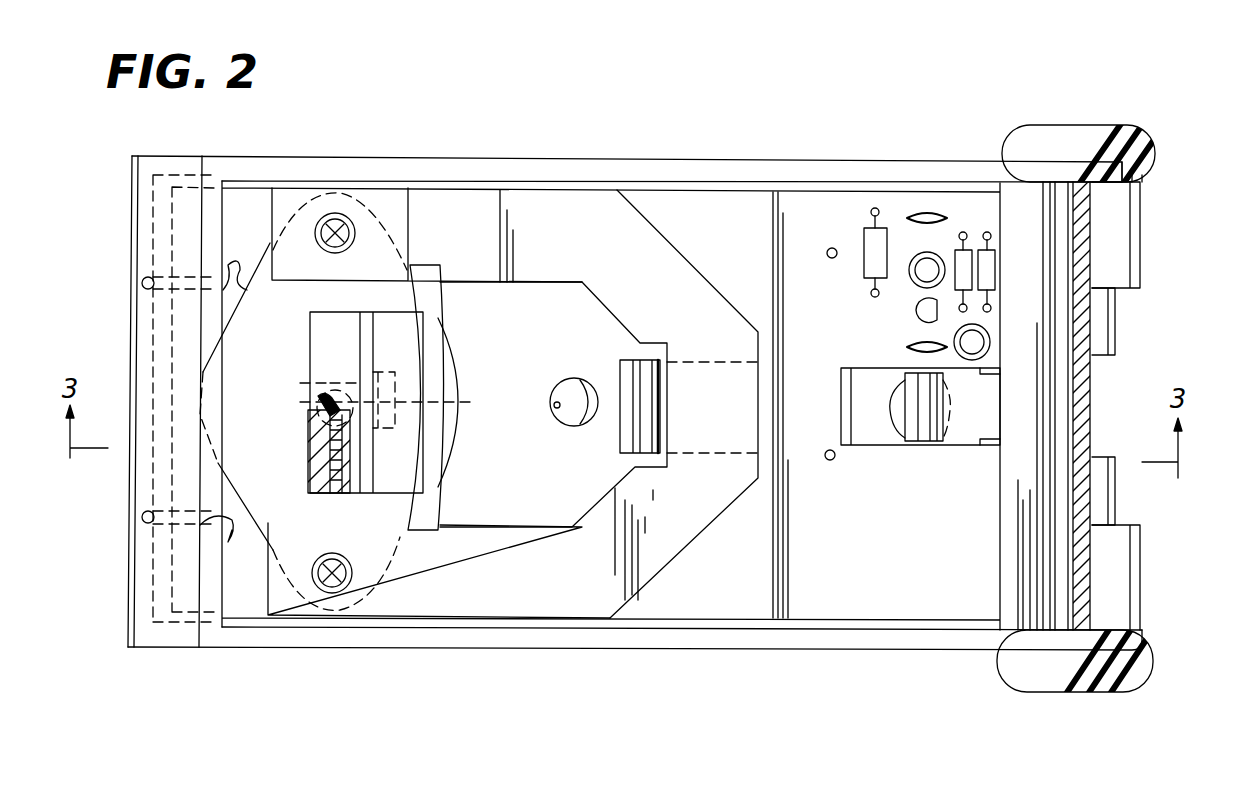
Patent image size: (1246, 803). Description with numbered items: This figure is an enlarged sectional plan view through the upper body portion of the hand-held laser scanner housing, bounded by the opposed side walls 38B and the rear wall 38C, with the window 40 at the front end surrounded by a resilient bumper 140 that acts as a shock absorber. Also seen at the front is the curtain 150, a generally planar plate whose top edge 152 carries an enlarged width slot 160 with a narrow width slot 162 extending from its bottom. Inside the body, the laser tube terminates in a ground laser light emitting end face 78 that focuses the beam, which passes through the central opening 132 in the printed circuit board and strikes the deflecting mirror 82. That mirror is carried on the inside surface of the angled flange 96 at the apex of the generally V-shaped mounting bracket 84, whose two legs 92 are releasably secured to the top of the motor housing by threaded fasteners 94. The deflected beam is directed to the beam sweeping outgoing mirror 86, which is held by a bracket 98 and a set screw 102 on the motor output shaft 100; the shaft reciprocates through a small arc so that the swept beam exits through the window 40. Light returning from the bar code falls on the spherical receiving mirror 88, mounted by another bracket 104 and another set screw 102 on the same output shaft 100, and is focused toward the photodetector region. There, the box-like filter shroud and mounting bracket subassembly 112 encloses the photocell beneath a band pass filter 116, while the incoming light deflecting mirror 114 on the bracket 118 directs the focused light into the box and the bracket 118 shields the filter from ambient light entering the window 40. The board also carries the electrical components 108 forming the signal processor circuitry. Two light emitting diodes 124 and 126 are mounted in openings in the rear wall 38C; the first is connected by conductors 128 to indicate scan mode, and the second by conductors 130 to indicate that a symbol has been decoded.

The side walls 38B is at (778, 162).
The rear wall 38C is at (135, 478).
The window 40 is at (1092, 303).
The laser light emitting end face 78 is at (554, 406).
The deflecting mirror 82 is at (625, 435).
The mounting bracket 84 is at (528, 205).
The beam sweeping (outgoing) mirror 86 is at (404, 402).
The receiving (collecting) mirror 88 is at (428, 366).
The legs 92 is at (472, 282).
The threaded fasteners 94 is at (355, 218).
The angled flange 96 is at (655, 412).
The bracket 98 is at (300, 381).
The output shaft 100 is at (316, 402).
The set screw 102 is at (308, 468).
The bracket 104 is at (330, 335).
The electrical components 108 is at (867, 282).
The filter shroud and mounting bracket subassembly 112 is at (860, 430).
The incoming light deflecting mirror 114 is at (915, 445).
The band pass filter 116 is at (897, 430).
The bracket 118 is at (940, 450).
The light emitting diode 124 is at (142, 519).
The light emitting diode 126 is at (142, 283).
The conductors 128 is at (238, 515).
The conductors 130 is at (249, 290).
The central opening 132 is at (594, 386).
The bumper 140 is at (1150, 178).
The curtain 150 is at (1150, 598).
The top edge 152 is at (1143, 535).
The enlarged width slot 160 is at (1125, 312).
The narrow width slot 162 is at (1108, 378).